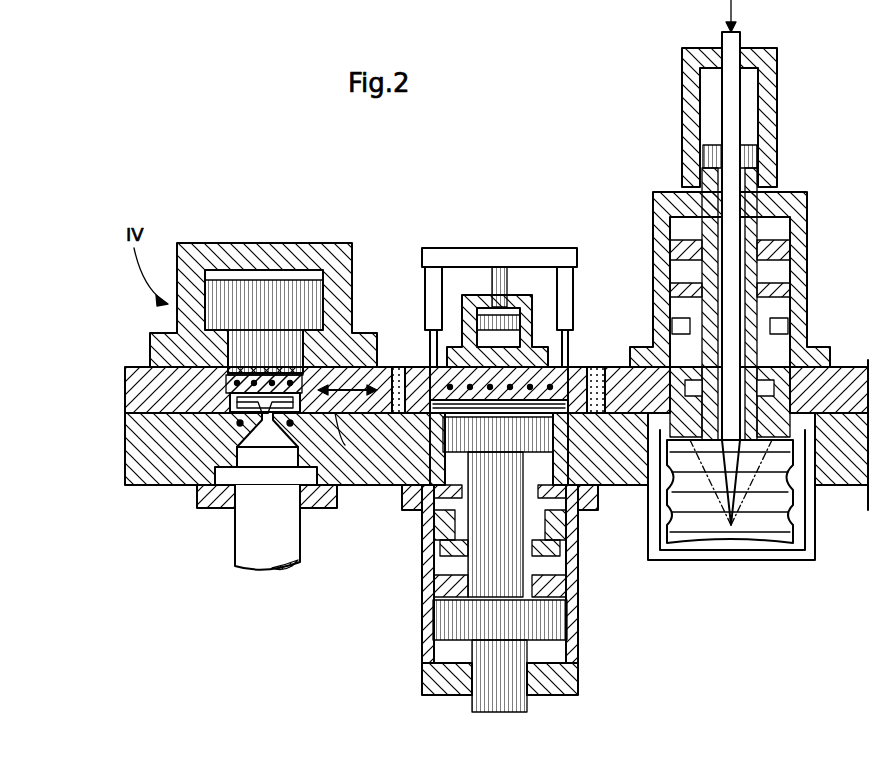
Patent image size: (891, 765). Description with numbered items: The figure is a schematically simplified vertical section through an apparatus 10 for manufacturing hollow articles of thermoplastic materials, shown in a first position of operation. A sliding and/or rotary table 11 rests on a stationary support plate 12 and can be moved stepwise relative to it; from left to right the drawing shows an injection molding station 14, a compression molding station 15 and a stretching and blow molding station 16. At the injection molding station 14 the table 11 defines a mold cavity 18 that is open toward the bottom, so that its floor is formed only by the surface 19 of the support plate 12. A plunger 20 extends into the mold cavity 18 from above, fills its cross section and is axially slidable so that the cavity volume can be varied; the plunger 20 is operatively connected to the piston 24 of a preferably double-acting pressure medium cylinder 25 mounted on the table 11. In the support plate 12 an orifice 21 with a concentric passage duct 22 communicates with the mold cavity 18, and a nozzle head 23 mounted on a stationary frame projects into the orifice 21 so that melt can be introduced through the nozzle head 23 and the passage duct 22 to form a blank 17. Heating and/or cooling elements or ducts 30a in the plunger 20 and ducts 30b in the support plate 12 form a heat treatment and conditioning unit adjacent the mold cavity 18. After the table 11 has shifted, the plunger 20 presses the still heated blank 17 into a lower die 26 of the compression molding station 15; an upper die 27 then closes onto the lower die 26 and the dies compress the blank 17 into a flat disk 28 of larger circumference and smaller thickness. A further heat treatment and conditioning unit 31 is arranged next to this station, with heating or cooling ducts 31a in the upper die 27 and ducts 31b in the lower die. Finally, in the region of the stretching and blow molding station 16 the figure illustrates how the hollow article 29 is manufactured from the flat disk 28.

The apparatus 10 is at (585, 222).
The sliding and/or rotary table 11 is at (150, 392).
The stationary support plate 12 is at (150, 455).
The injection molding station 14 is at (203, 531).
The compression molding station 15 is at (484, 455).
The stretching and blow molding station 16 is at (747, 307).
The blank 17 is at (225, 450).
The mold cavity 18 is at (228, 393).
The surface 19 is at (350, 450).
The plunger 20 is at (297, 348).
The orifice 21 is at (258, 428).
The passage duct 22 is at (266, 420).
The nozzle head 23 is at (262, 552).
The piston 24 is at (241, 292).
The pressure medium cylinder 25 is at (292, 276).
The lower die 26 is at (405, 468).
The upper die 27 is at (545, 350).
The disk 28 is at (562, 510).
The hollow article 29 is at (790, 535).
The heating or cooling ducts 30a is at (270, 384).
The heating or cooling ducts 30b is at (452, 412).
The heat treatment and conditioning unit 31 is at (560, 430).
The heating or cooling ducts 31a is at (452, 345).
The heating or cooling ducts 31b is at (468, 450).